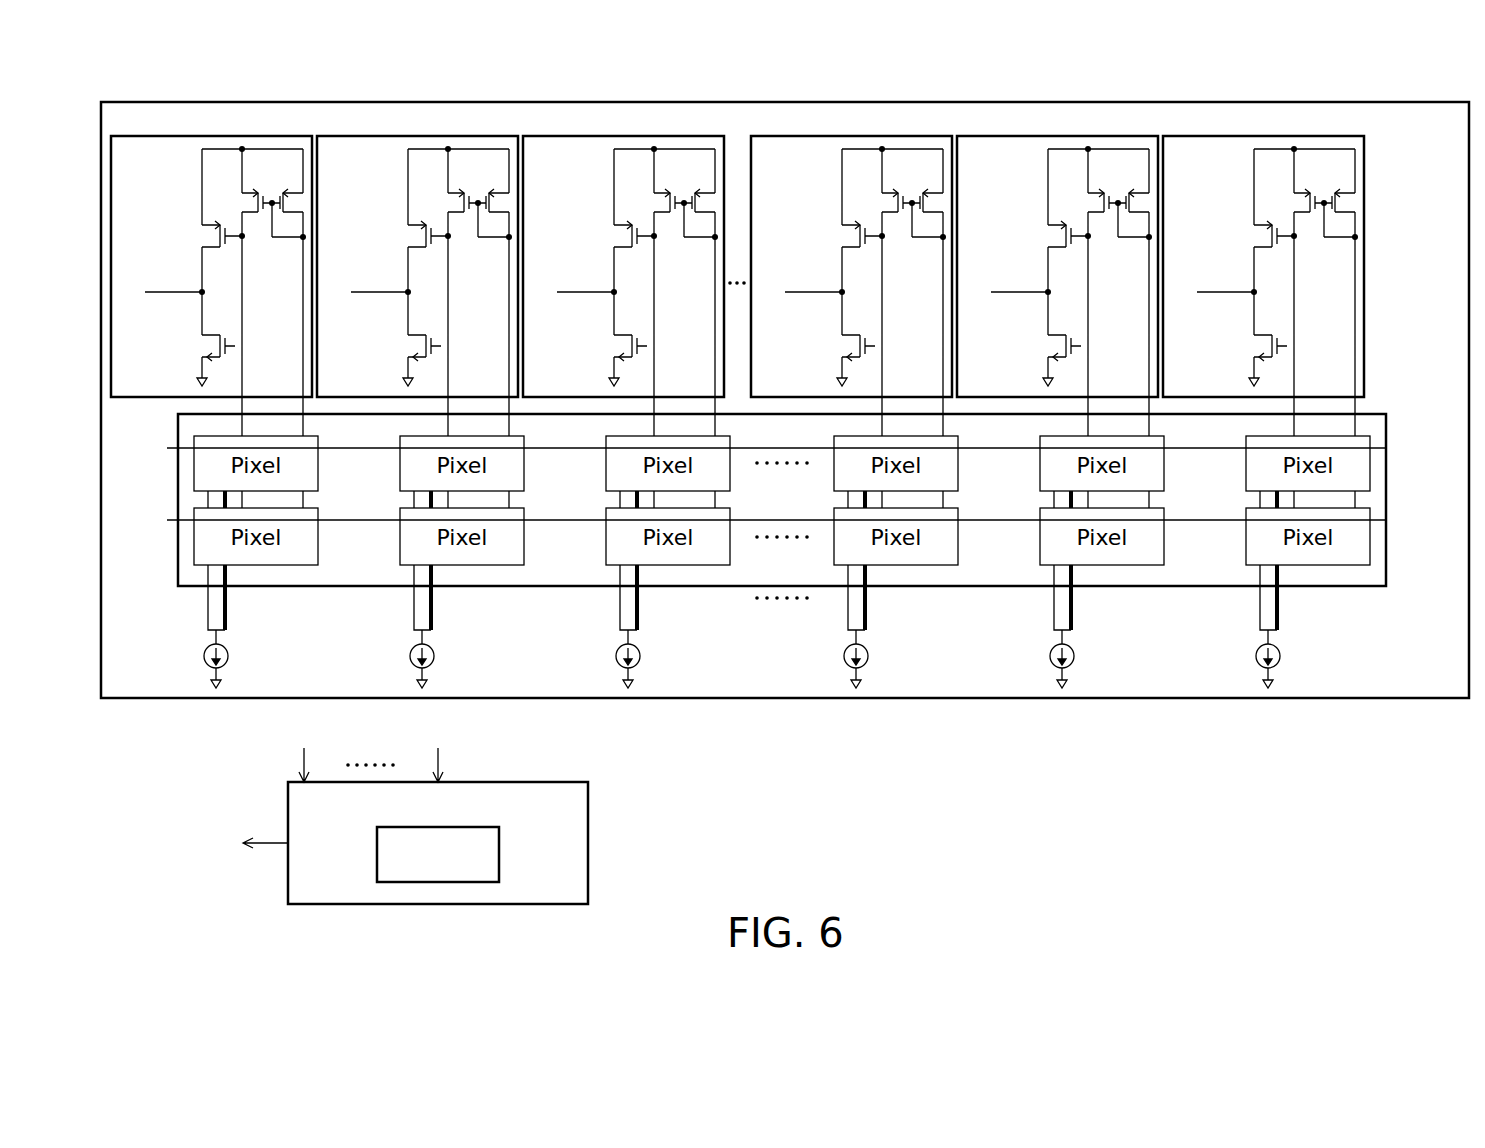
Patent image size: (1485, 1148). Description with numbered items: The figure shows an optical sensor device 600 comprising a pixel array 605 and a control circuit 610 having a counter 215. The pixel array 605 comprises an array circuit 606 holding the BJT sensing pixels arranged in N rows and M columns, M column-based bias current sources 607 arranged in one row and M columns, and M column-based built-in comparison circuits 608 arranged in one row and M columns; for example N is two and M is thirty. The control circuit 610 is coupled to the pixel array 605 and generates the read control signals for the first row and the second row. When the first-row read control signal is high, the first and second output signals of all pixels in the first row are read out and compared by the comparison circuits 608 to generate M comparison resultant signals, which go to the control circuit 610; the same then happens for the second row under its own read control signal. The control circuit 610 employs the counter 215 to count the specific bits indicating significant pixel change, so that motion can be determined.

The optical sensor device 600 is at (1312, 92).
The pixel array 605 is at (1415, 699).
The array circuit 606 is at (1388, 497).
The column-based bias current source 607 is at (1316, 656).
The column-based built-in comparison circuit 608 is at (1304, 136).
The control circuit 610 is at (399, 812).
The counter 215 is at (500, 853).